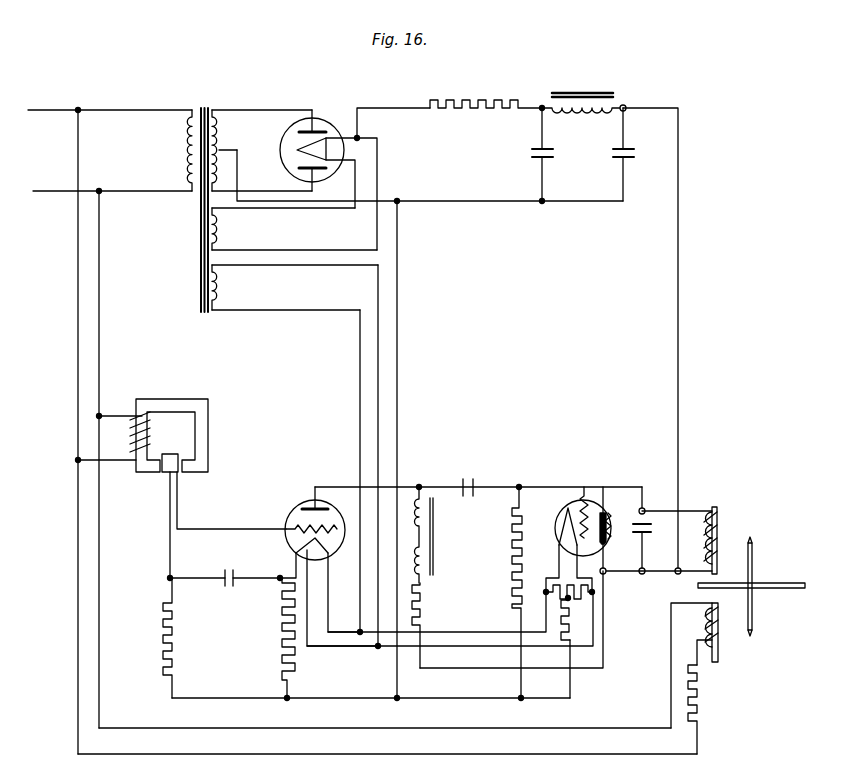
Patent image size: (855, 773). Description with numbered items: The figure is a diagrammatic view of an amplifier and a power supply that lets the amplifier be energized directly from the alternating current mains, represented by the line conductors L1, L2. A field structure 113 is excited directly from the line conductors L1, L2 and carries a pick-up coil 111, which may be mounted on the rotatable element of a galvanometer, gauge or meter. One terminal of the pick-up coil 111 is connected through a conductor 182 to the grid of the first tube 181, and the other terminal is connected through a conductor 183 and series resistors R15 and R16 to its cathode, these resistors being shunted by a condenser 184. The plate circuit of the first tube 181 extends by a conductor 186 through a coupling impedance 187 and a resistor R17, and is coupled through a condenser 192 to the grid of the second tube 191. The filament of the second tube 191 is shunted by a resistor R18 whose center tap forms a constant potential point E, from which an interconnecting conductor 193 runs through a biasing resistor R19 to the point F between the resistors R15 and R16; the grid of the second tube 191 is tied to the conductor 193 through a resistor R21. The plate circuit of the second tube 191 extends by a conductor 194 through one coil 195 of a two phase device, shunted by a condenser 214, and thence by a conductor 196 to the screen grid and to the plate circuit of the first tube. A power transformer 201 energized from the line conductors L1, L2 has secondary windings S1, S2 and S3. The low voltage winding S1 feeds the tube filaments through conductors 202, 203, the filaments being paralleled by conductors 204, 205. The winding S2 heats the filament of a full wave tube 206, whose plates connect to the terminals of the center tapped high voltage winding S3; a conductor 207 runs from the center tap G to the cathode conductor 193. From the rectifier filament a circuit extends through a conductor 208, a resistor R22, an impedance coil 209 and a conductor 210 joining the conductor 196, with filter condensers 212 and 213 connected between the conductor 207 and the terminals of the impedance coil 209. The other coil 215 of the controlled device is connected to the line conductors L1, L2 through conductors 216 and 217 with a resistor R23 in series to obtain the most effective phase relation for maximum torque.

The line conductor L1 is at (58, 108).
The line conductor L2 is at (58, 190).
The power transformer 201 is at (196, 90).
The center tapped high voltage secondary winding S3 is at (219, 140).
The secondary winding S2 is at (220, 232).
The low voltage secondary winding S1 is at (220, 288).
The center tap G is at (234, 152).
The conductor 207 is at (237, 176).
The full wave tube 206 is at (333, 100).
The conductor 208 is at (416, 105).
The resistor R22 is at (478, 96).
The impedance coil 209 is at (590, 93).
The filter condenser 212 is at (532, 153).
The filter condenser 213 is at (614, 153).
The conductor 210 is at (677, 285).
The conductor 202 is at (377, 364).
The conductor 203 is at (358, 337).
The field structure 113 is at (208, 432).
The pick-up coil 111 is at (170, 452).
The conductor 182 is at (206, 529).
The conductor 183 is at (171, 548).
The first tube 181 is at (293, 506).
The condenser 184 is at (229, 585).
The resistor R15 is at (176, 640).
The resistor R16 is at (284, 640).
The point F is at (289, 697).
The interconnecting conductor 193 is at (348, 698).
The conductor 186 is at (360, 486).
The condenser 192 is at (473, 479).
The coupling impedance 187 is at (434, 540).
The resistor R17 is at (428, 604).
The resistor R21 is at (514, 566).
The second tube 191 is at (572, 505).
The conductor 194 is at (615, 486).
The condenser 214 is at (636, 522).
The conductor 196 is at (608, 568).
The resistor R18 is at (594, 591).
The biasing resistor R19 is at (575, 617).
The constant potential point E is at (567, 599).
The conductor 204 is at (490, 632).
The conductor 205 is at (490, 647).
The coil 195 is at (722, 532).
The coil 215 is at (710, 632).
The resistor R23 is at (704, 690).
The conductor 216 is at (542, 726).
The conductor 217 is at (541, 753).